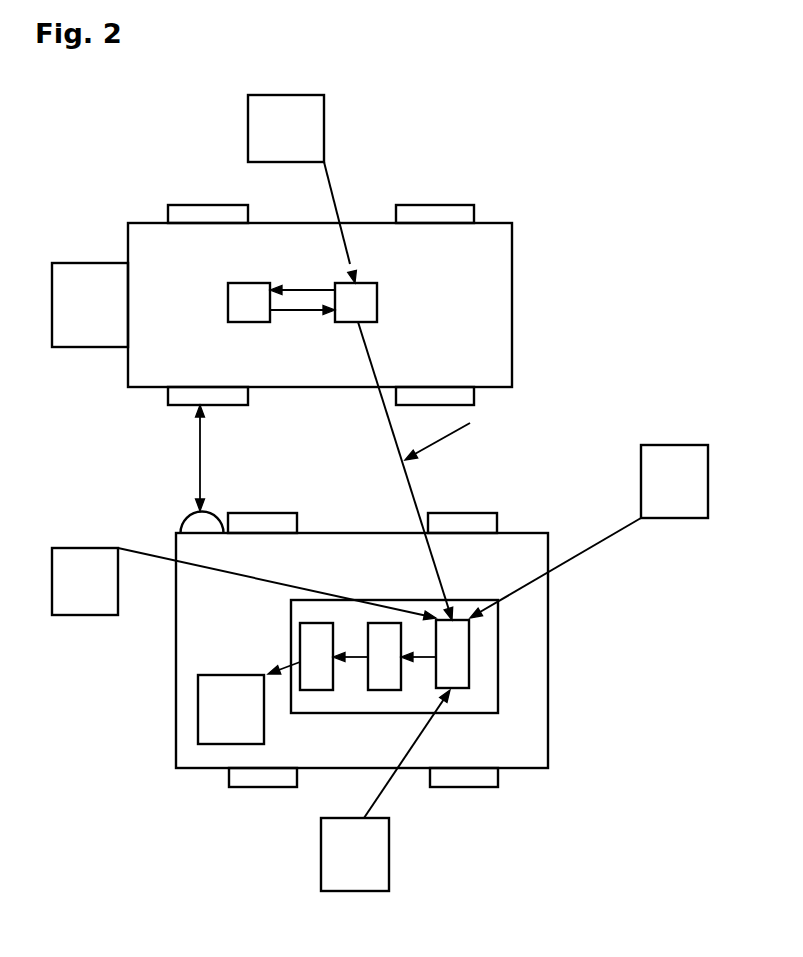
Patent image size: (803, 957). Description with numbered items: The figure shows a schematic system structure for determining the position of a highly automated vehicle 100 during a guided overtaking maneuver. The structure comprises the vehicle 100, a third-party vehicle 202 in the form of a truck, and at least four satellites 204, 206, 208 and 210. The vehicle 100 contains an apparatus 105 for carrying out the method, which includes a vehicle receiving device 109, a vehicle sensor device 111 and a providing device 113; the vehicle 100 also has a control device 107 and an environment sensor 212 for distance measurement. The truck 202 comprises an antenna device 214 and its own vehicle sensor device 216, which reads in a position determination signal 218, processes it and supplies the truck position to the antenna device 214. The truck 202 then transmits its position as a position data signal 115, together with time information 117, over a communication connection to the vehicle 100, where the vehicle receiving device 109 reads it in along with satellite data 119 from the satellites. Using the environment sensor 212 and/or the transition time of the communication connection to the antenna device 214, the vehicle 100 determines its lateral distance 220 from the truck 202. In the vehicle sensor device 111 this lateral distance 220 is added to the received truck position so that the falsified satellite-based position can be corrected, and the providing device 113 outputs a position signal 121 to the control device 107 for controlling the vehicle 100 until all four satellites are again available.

The highly automated vehicle 100 is at (528, 533).
The apparatus 105 is at (498, 697).
The control device 107 is at (198, 707).
The vehicle receiving device 109 is at (462, 620).
The vehicle sensor device 111 is at (385, 623).
The providing device 113 is at (315, 623).
The position data signal 115 is at (400, 459).
The time information 117 is at (437, 443).
The satellite data 119 is at (325, 166).
The position signal 121 is at (274, 668).
The third-party vehicle 202 is at (490, 222).
The satellite 204 is at (324, 122).
The satellite 206 is at (672, 445).
The satellite 208 is at (389, 853).
The satellite 210 is at (64, 548).
The environment sensor 212 is at (186, 514).
The antenna device 214 is at (378, 301).
The vehicle sensor device 216 is at (228, 299).
The position determination signal 218 is at (310, 310).
The lateral distance 220 is at (199, 453).